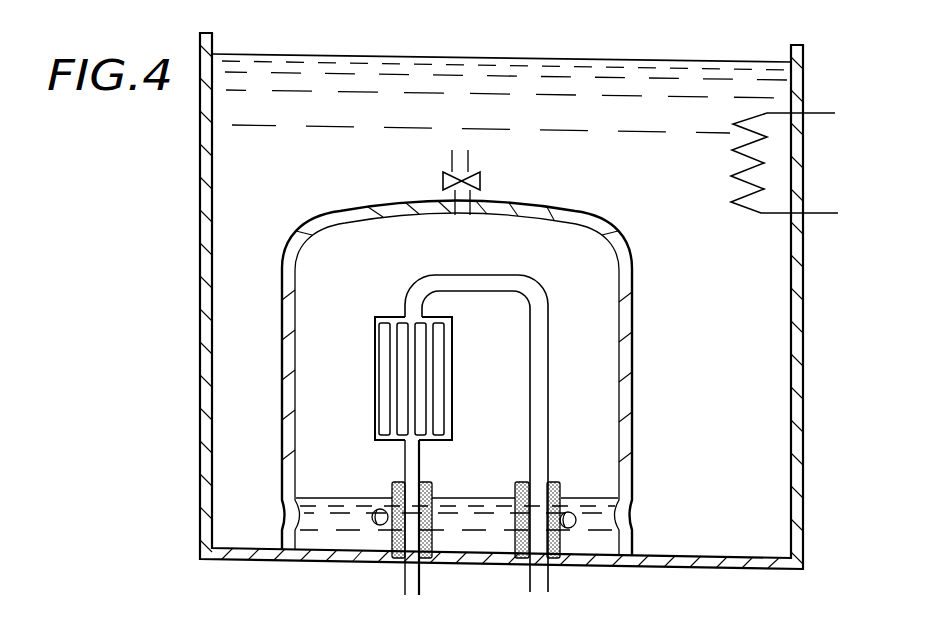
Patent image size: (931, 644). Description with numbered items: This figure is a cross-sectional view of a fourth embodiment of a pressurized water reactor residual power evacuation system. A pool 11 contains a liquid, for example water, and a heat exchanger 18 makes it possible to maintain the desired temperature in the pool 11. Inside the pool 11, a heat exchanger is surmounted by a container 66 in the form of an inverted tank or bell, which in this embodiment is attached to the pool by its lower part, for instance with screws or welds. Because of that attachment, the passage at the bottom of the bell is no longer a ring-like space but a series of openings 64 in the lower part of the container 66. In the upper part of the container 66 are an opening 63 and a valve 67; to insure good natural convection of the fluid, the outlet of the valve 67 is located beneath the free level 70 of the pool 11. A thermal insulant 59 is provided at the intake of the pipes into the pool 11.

The pool 11 is at (200, 506).
The heat exchanger 18 is at (729, 176).
The thermal insulant 59 is at (515, 482).
The opening 63 is at (461, 217).
The openings 64 is at (617, 522).
The container 66 is at (632, 376).
The valve 67 is at (441, 181).
The free level 70 is at (381, 54).